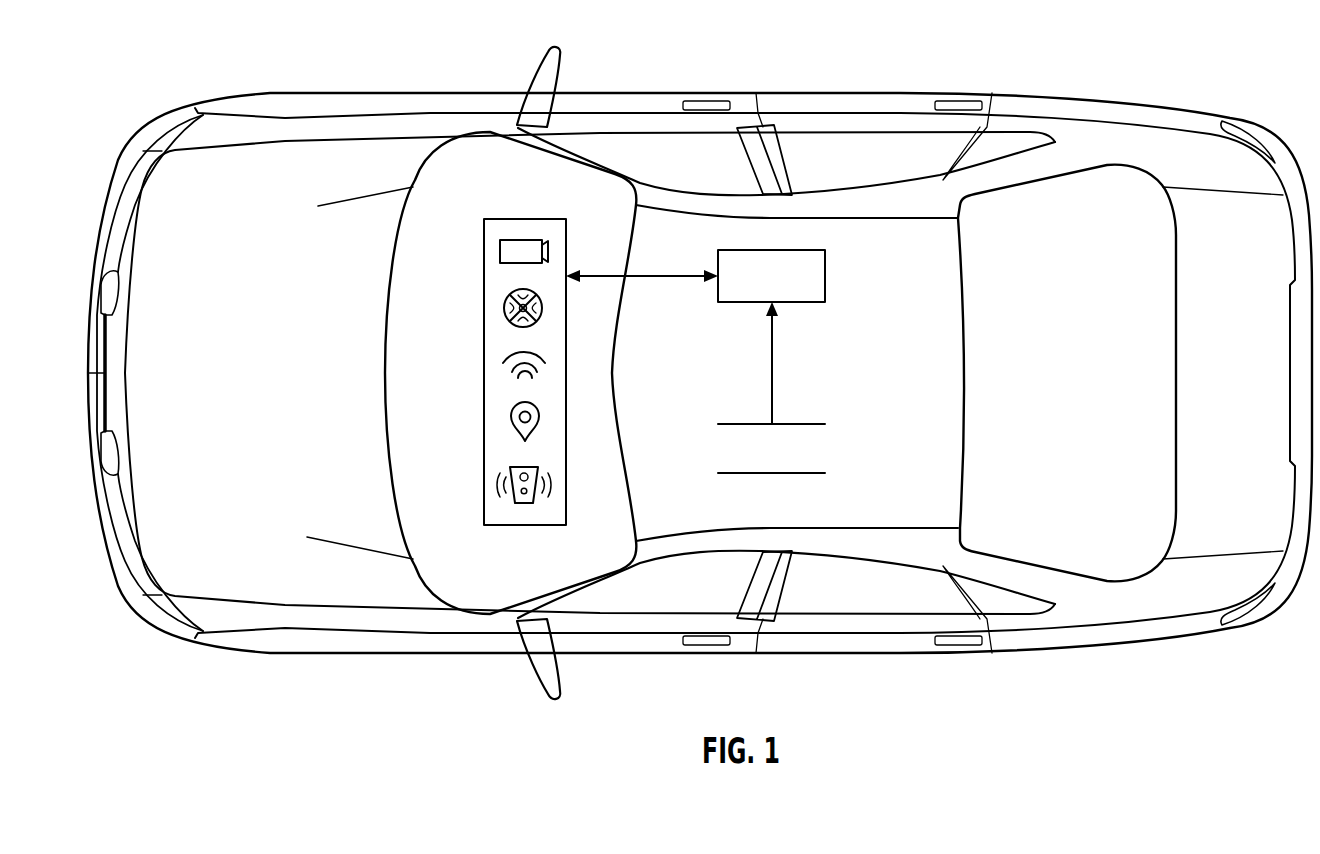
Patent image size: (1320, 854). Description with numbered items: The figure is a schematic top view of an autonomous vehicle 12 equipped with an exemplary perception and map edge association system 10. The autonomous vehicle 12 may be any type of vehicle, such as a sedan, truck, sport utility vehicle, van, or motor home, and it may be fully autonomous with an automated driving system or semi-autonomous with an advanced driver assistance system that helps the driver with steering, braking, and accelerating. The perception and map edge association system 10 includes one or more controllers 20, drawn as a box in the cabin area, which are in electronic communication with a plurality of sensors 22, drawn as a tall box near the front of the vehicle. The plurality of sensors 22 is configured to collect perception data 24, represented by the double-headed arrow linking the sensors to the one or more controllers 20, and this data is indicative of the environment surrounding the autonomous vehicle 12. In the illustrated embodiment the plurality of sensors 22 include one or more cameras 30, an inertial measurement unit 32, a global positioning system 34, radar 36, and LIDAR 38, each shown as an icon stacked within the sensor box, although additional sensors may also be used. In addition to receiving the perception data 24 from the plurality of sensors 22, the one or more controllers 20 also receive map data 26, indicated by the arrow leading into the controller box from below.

The perception and map edge association system 10 is at (690, 174).
The autonomous vehicle 12 is at (1083, 95).
The controllers 20 is at (786, 291).
The plurality of sensors 22 is at (510, 219).
The perception data 24 is at (652, 273).
The map data 26 is at (786, 464).
The cameras 30 is at (497, 252).
The inertial measurement unit (IMU) 32 is at (503, 308).
The global positioning system (GPS) 34 is at (503, 363).
The radar 36 is at (510, 418).
The LIDAR 38 is at (497, 483).